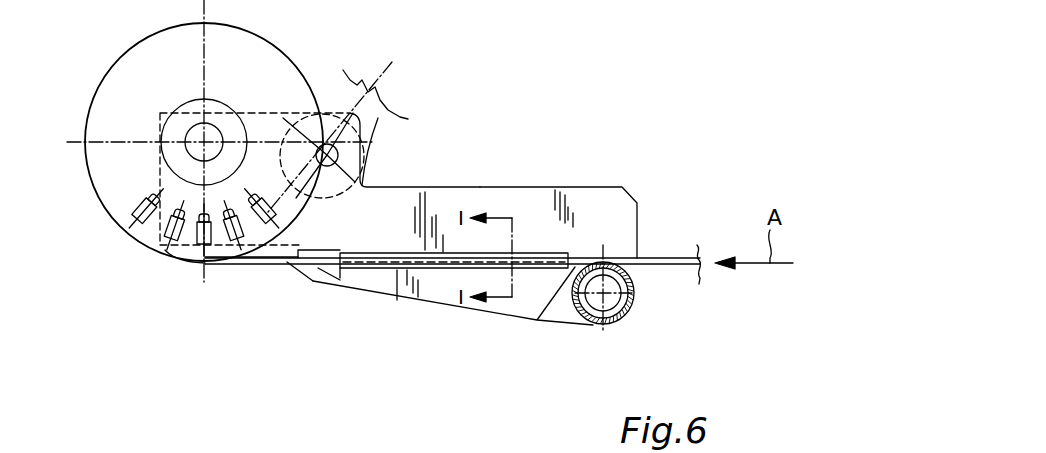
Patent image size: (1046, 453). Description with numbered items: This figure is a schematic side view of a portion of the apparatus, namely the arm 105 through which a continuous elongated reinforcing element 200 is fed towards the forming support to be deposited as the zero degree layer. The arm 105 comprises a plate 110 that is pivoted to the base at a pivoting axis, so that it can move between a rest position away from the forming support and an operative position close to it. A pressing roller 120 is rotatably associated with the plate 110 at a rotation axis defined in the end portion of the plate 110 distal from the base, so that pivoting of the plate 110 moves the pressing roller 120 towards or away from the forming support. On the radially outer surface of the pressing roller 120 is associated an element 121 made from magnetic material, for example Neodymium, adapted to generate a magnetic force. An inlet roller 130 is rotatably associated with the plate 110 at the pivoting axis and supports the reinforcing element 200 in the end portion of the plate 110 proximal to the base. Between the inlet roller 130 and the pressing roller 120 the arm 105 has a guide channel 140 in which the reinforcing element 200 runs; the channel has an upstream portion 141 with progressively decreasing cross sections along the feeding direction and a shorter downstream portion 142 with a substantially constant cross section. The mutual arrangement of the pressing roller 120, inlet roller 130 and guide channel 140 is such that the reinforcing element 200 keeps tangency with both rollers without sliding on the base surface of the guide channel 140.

The arm 105 is at (437, 184).
The plate 110 is at (575, 187).
The pressing roller 120 is at (120, 93).
The element made from magnetic material 121 is at (133, 238).
The inlet roller 130 is at (609, 304).
The guide channel 140 is at (388, 268).
The upstream portion 141 is at (434, 270).
The downstream portion 142 is at (318, 263).
The continuous elongated reinforcing element 200 is at (660, 258).